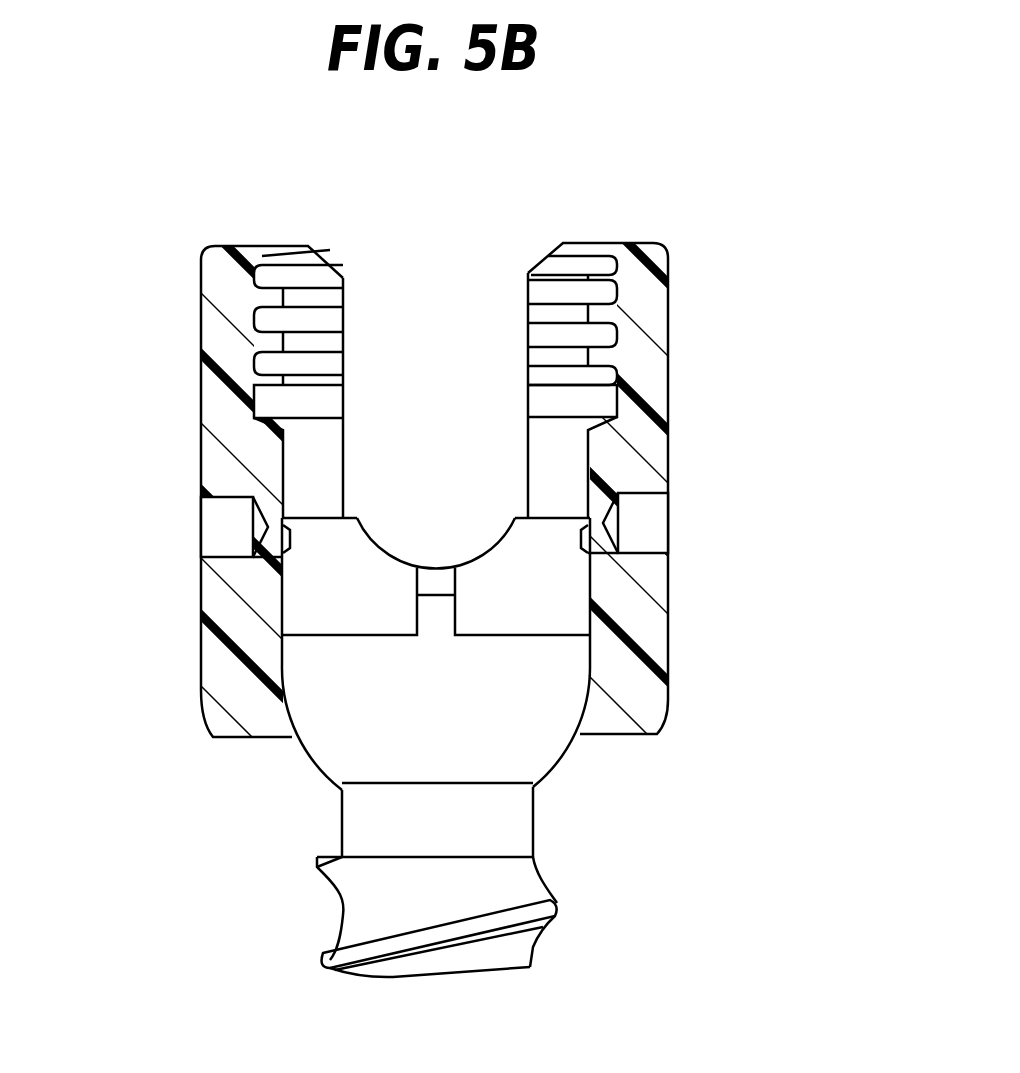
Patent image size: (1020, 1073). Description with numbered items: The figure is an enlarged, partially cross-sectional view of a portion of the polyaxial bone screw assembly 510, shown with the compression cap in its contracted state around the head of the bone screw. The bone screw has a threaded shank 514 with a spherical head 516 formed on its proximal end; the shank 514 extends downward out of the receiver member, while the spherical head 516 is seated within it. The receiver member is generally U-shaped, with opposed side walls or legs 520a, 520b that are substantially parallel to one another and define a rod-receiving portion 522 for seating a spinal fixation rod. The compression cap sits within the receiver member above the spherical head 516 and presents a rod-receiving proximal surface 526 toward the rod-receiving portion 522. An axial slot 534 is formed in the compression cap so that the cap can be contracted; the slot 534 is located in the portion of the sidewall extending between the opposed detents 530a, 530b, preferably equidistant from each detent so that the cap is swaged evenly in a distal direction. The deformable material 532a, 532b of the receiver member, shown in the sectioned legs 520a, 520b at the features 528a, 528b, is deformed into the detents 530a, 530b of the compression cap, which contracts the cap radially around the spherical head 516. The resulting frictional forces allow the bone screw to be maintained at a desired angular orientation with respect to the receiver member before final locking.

The polyaxial bone screw assembly 510 is at (177, 148).
The threaded shank 514 is at (553, 895).
The spherical head 516 is at (468, 722).
The side wall or leg 520a is at (652, 325).
The side wall or leg 520b is at (218, 330).
The rod-receiving portion 522 is at (489, 262).
The rod-receiving proximal surface 526 is at (383, 550).
The first recess 528a is at (697, 522).
The second recess 528b is at (176, 527).
The detent 530a is at (588, 540).
The detent 530b is at (286, 548).
The deformable material 532a is at (588, 547).
The deformable material 532b is at (275, 558).
The axial slot 534 is at (435, 615).